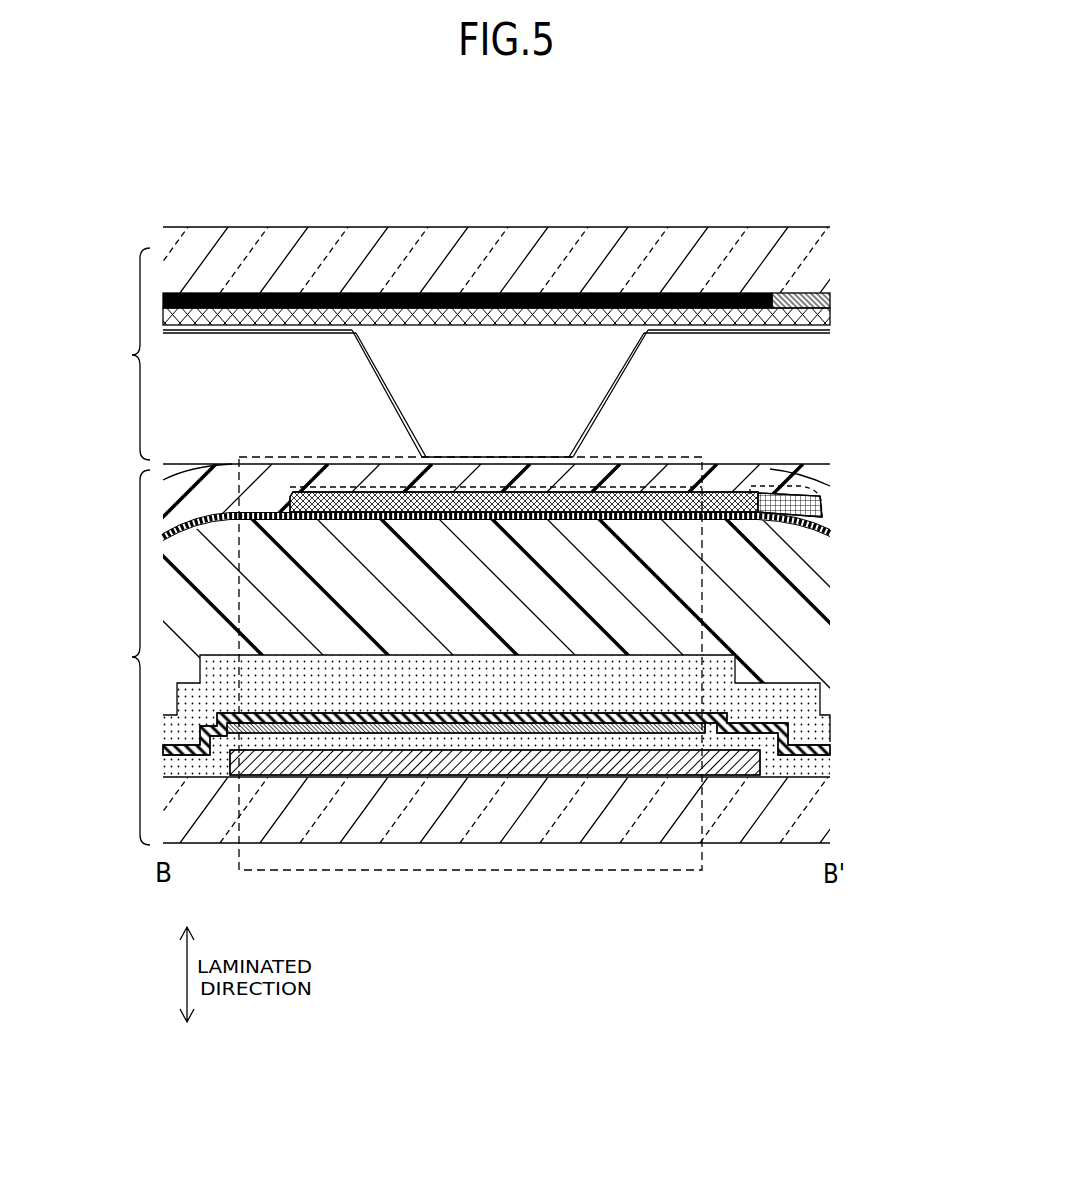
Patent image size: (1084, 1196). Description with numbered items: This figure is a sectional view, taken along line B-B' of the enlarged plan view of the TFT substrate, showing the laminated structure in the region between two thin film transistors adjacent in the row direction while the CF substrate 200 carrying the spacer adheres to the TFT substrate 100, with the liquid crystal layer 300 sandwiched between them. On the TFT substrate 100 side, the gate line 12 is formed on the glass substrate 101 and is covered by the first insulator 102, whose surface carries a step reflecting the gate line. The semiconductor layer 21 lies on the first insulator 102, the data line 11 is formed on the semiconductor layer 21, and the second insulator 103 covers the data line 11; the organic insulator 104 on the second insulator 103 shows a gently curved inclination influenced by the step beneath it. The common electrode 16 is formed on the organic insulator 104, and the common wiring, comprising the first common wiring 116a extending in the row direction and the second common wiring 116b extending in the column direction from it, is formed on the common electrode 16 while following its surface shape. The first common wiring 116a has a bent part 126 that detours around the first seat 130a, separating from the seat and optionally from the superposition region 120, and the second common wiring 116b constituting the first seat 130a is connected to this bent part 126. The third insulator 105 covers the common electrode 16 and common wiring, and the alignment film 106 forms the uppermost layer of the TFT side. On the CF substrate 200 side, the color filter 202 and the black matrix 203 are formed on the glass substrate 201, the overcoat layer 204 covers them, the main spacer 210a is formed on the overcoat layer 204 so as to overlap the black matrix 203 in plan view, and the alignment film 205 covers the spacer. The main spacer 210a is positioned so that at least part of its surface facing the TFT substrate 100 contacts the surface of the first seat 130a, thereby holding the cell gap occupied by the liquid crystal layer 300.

The TFT substrate 100 is at (112, 657).
The glass substrate 101 is at (830, 813).
The first insulator 102 is at (830, 760).
The second insulator 103 is at (830, 723).
The organic insulator 104 is at (827, 663).
The third insulator 105 is at (787, 475).
The alignment film 106 is at (175, 468).
The data line 11 is at (383, 723).
The semiconductor layer 21 is at (432, 733).
The gate line 12 is at (619, 777).
The common electrode 16 is at (830, 527).
The first common wiring 116a is at (820, 505).
The second common wiring 116b is at (572, 500).
The bent part 126 is at (767, 486).
The superposition region 120 is at (562, 870).
The first seat 130a is at (647, 515).
The CF substrate 200 is at (116, 354).
The glass substrate 201 is at (825, 256).
The color filter 202 is at (792, 297).
The black matrix 203 is at (678, 293).
The overcoat layer 204 is at (825, 318).
The alignment film 205 is at (830, 333).
The main spacer 210a is at (580, 390).
The liquid crystal layer 300 is at (825, 415).